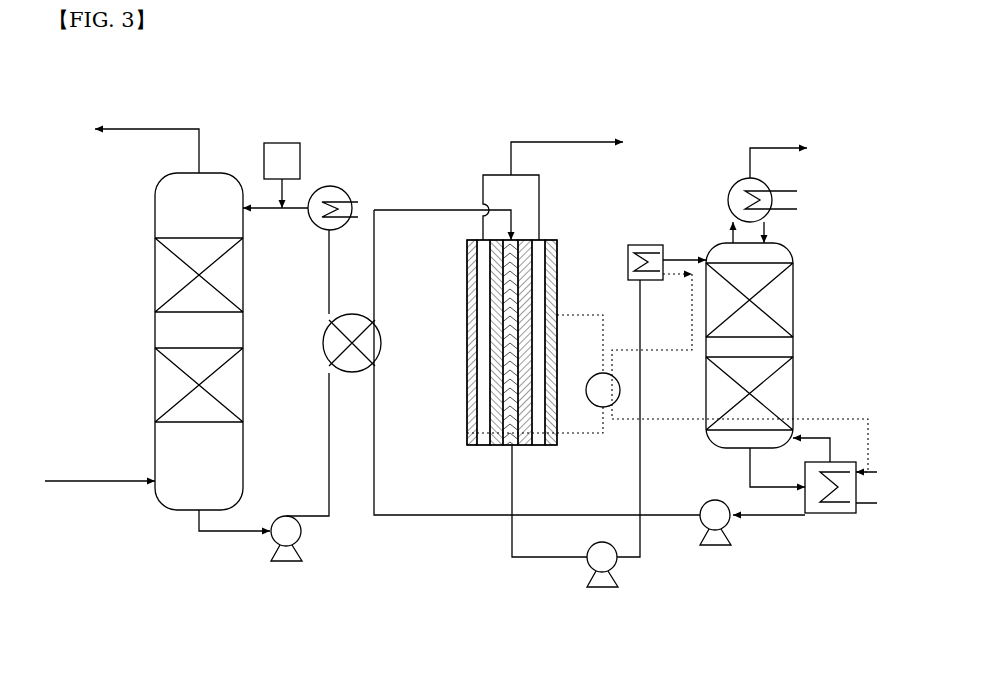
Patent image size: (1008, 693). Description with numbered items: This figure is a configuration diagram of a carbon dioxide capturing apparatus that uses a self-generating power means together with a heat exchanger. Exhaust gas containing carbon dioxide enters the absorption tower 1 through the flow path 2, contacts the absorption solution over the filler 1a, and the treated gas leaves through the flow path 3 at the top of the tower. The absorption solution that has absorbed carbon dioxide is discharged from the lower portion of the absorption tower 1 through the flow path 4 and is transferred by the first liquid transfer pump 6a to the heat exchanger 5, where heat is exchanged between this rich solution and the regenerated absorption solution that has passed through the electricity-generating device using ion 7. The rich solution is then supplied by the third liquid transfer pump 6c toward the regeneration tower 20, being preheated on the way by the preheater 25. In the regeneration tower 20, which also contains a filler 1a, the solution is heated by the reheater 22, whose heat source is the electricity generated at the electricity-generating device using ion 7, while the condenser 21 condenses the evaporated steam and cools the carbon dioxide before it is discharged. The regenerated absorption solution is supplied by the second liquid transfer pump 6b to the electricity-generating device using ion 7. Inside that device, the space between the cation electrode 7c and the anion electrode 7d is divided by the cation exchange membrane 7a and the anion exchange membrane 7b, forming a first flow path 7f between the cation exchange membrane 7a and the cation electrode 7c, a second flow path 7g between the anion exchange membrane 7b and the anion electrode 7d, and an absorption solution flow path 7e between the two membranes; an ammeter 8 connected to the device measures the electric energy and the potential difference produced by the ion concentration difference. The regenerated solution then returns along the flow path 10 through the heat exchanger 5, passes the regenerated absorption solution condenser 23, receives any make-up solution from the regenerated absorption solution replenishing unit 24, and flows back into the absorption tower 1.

The absorption tower 1 is at (153, 328).
The filler 1a is at (199, 330).
The flow path for exhaust gas containing carbon dioxide 2 is at (93, 478).
The flow path for exhaust gas which has passed through the absorption tower 3 is at (147, 127).
The flow path for absorption solution having absorbed carbon dioxide 4 is at (221, 533).
The heat exchanger 5 is at (322, 340).
The first liquid transfer pump 6a is at (286, 563).
The second liquid transfer pump 6b is at (715, 547).
The third liquid transfer pump 6c is at (601, 590).
The electricity-generating device using ion 7 is at (517, 307).
The cation exchange membrane 7a is at (493, 287).
The anion exchange membrane 7b is at (528, 290).
The cation electrode 7c is at (467, 437).
The anion electrode 7d is at (560, 440).
The absorption solution flow path 7e is at (527, 258).
The first flow path 7f is at (482, 407).
The second flow path 7g is at (540, 410).
The ammeter 8 is at (590, 378).
The flow path for regenerated absorption solution 10 is at (511, 533).
The regeneration tower 20 is at (815, 295).
The condenser 21 is at (728, 197).
The reheater 22 is at (828, 515).
The regenerated absorption solution condenser 23 is at (330, 186).
The regenerated absorption solution replenishing unit 24 is at (283, 141).
The preheater 25 is at (641, 244).